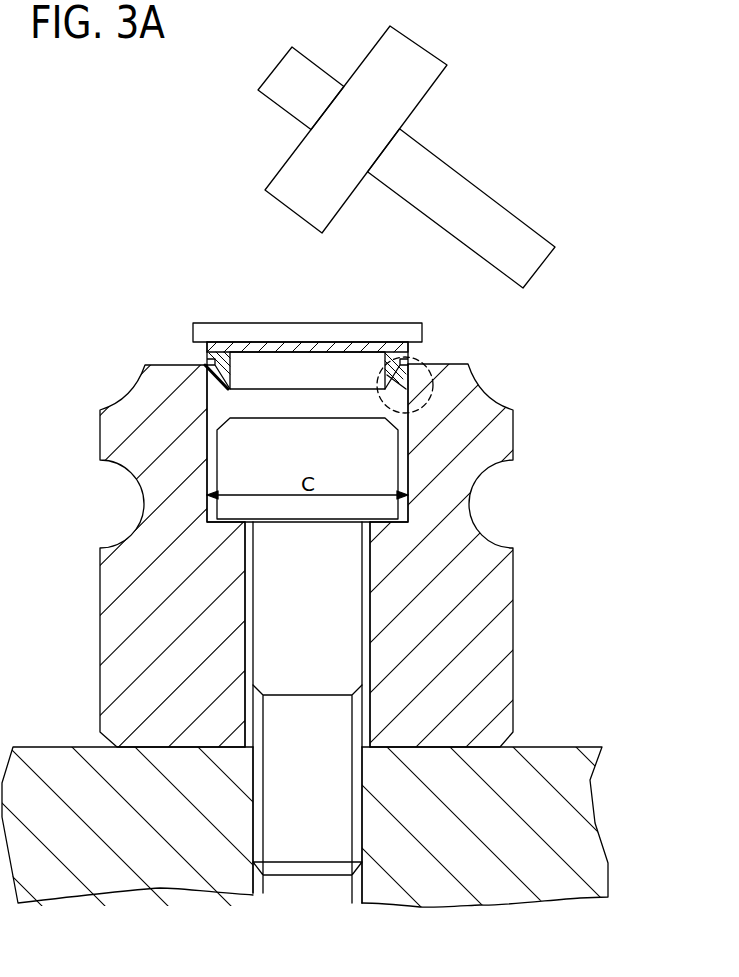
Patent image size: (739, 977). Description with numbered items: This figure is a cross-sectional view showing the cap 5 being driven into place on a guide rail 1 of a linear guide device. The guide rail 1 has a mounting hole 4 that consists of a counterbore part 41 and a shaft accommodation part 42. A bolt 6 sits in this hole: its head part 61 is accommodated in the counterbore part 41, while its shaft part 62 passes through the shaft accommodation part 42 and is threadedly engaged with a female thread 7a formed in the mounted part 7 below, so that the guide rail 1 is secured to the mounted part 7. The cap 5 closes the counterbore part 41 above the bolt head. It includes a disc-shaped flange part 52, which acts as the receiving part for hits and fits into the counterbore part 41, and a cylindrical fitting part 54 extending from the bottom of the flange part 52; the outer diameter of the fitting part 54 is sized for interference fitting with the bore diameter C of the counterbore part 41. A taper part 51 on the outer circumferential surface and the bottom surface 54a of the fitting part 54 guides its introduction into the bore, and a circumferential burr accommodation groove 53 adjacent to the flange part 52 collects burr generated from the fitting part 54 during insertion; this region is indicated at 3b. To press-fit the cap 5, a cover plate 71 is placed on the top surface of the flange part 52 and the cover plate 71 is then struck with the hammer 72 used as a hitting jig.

The guide rail 1 is at (369, 636).
The enlarged portion 3b is at (428, 352).
The mounting hole 4 is at (369, 560).
The counterbore part 41 is at (410, 466).
The shaft accommodation part 42 is at (252, 596).
The cap 5 is at (219, 357).
The taper part 51 is at (205, 388).
The flange part 52 is at (270, 347).
The burr accommodation groove 53 is at (403, 352).
The fitting part 54 is at (200, 366).
The bottom surface 54a is at (210, 418).
The bolt 6 is at (309, 660).
The head part 61 is at (238, 462).
The shaft part 62 is at (337, 665).
The mounted part 7 is at (369, 826).
The female thread 7a is at (360, 810).
The cover plate 71 is at (227, 334).
The hammer 72 is at (437, 170).